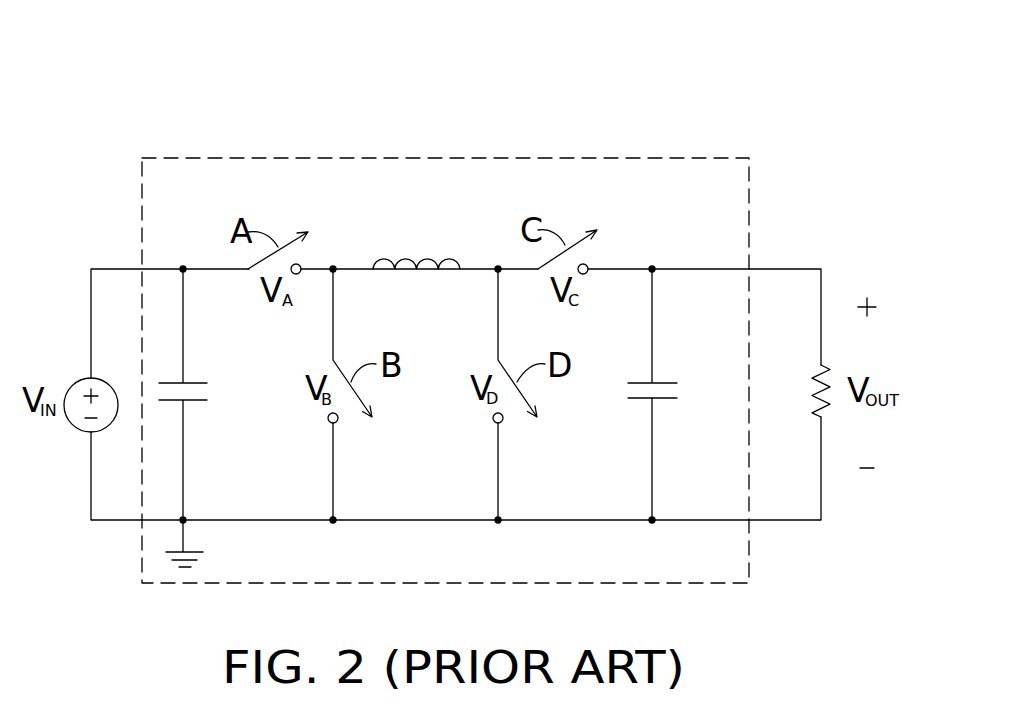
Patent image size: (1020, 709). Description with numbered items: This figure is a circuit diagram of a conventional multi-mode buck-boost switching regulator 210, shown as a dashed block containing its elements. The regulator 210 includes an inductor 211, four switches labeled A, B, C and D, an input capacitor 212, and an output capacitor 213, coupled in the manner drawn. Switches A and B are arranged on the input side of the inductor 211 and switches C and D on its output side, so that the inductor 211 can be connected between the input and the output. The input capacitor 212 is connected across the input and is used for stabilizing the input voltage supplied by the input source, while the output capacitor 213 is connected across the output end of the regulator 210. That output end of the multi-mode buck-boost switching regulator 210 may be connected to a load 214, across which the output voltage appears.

The multi-mode buck-boost switching regulator 210 is at (502, 158).
The inductor 211 is at (412, 257).
The input capacitor 212 is at (197, 402).
The output capacitor 213 is at (667, 400).
The load 214 is at (813, 402).